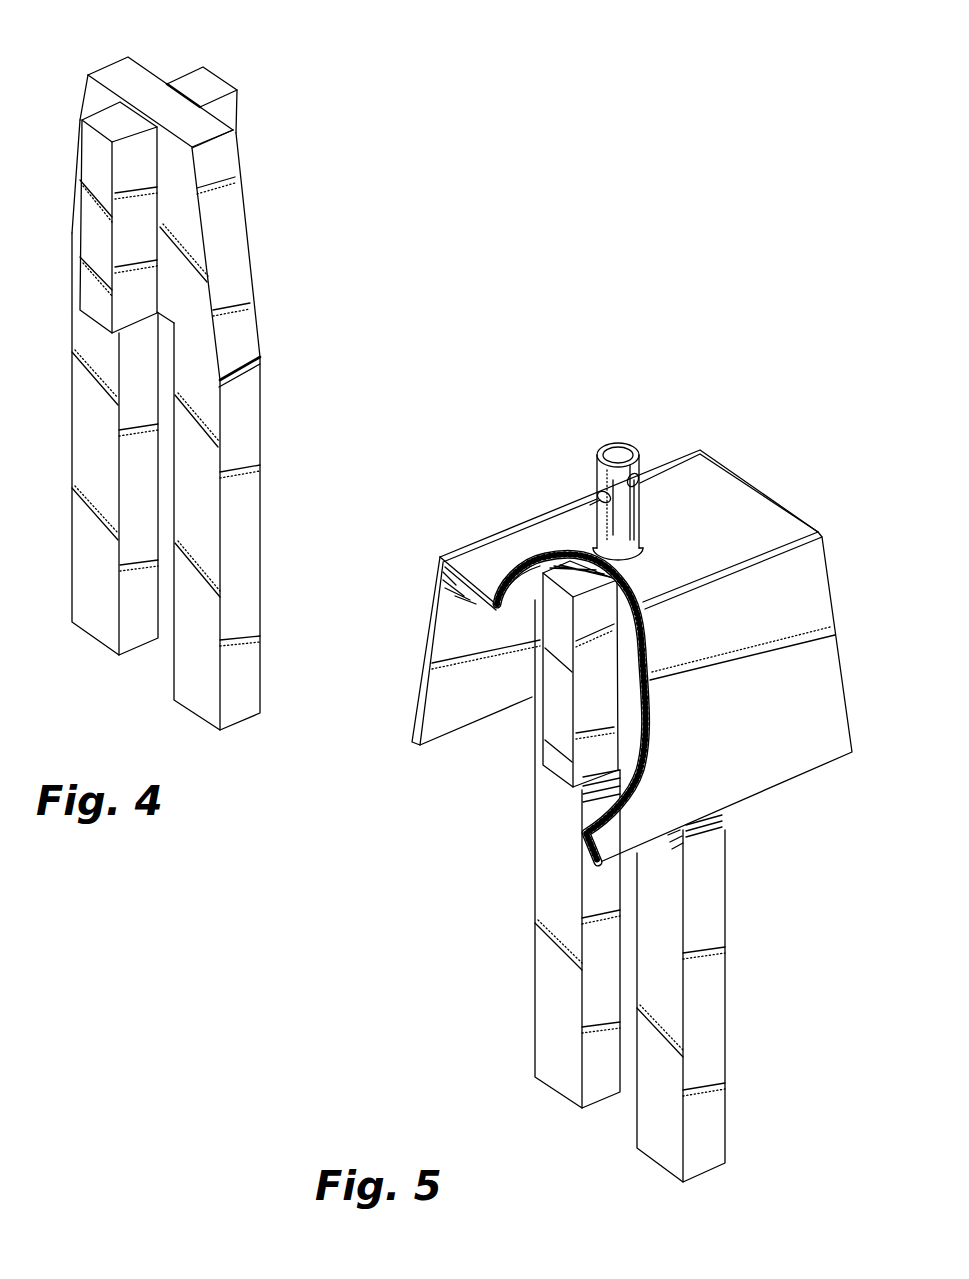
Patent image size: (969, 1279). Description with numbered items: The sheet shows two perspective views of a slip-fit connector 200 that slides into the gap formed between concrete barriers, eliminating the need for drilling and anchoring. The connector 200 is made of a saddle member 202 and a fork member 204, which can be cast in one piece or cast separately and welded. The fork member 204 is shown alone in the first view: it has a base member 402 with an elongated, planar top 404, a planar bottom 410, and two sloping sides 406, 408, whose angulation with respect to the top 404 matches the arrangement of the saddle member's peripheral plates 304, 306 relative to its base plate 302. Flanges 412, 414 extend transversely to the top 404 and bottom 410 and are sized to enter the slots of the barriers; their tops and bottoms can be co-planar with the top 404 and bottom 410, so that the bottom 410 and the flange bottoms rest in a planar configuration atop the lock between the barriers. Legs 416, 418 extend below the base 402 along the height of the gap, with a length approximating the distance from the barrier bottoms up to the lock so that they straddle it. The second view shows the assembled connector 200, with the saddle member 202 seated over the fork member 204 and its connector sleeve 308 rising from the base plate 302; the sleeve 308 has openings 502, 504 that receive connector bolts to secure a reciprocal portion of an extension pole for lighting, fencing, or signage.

In FIG. 5, the connector 200 is at (530, 412).
In FIG. 5, the saddle member 202 is at (760, 478).
In FIG. 4, the fork member 204 is at (263, 72).
In FIG. 5, the fork member 204 is at (528, 752).
In FIG. 5, the base plate 302 is at (517, 603).
In FIG. 5, the peripheral plate 304 is at (440, 722).
In FIG. 5, the peripheral plate 306 is at (808, 762).
In FIG. 5, the connector sleeve 308 is at (608, 440).
In FIG. 4, the base member 402 is at (252, 208).
In FIG. 4, the elongated top 404 is at (112, 74).
In FIG. 4, the sloping side 406 is at (72, 232).
In FIG. 4, the sloping side 408 is at (238, 262).
In FIG. 4, the bottom 410 is at (162, 318).
In FIG. 5, the bottom 410 is at (640, 787).
In FIG. 4, the flange 412 is at (192, 82).
In FIG. 4, the flange 414 is at (84, 143).
In FIG. 5, the flange 414 is at (556, 642).
In FIG. 4, the leg 416 is at (72, 438).
In FIG. 5, the leg 416 is at (536, 896).
In FIG. 4, the leg 418 is at (254, 416).
In FIG. 5, the leg 418 is at (716, 914).
In FIG. 5, the opening 502 is at (588, 504).
In FIG. 5, the opening 504 is at (653, 458).